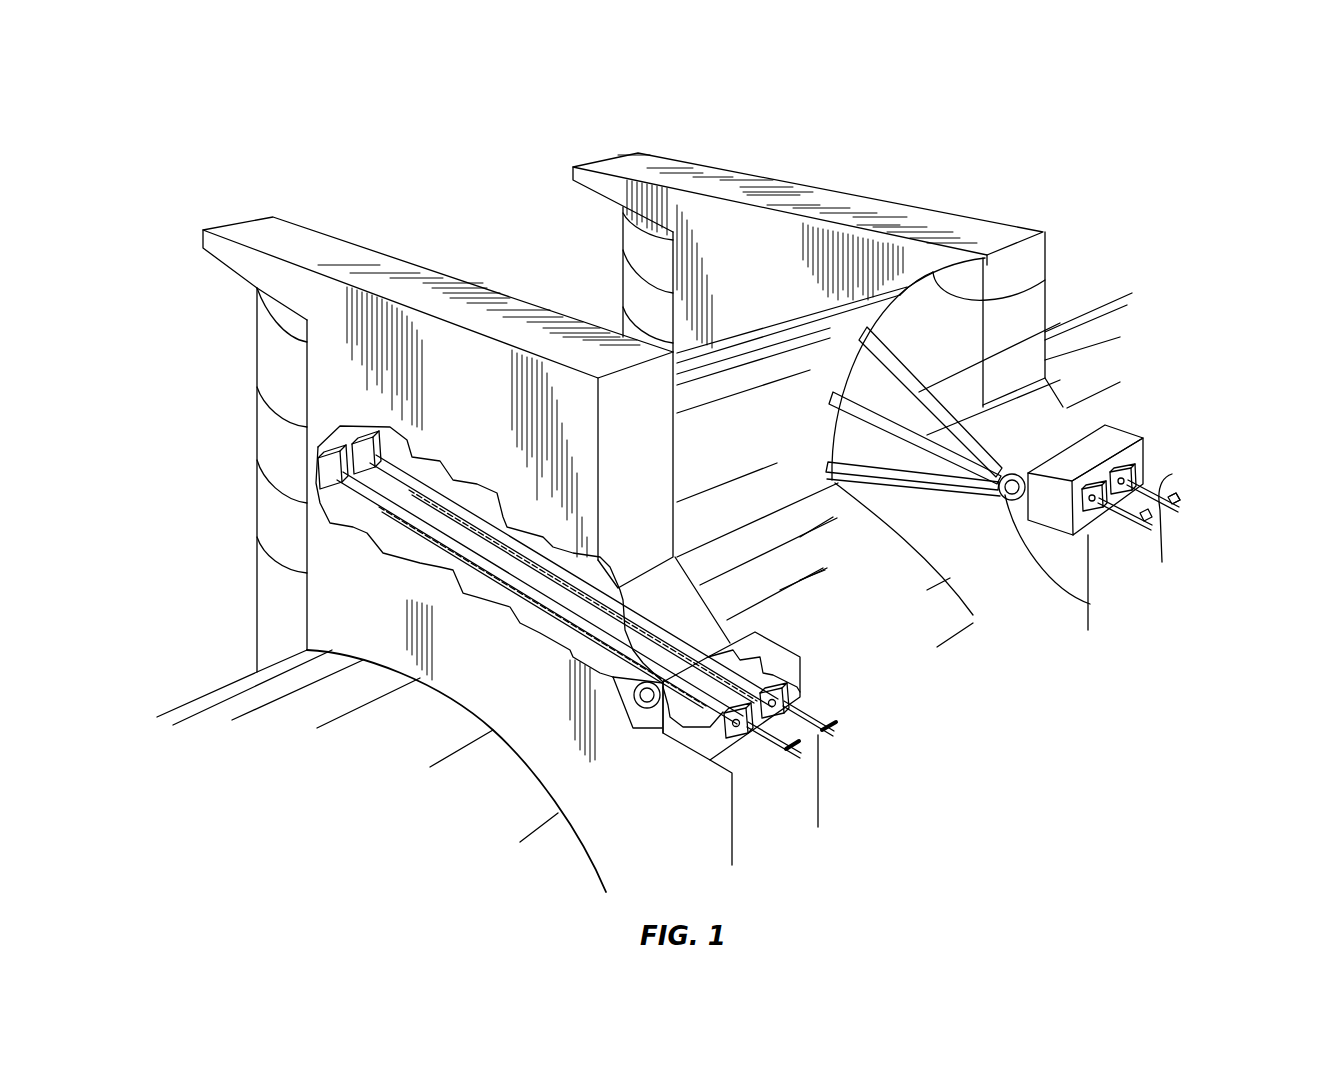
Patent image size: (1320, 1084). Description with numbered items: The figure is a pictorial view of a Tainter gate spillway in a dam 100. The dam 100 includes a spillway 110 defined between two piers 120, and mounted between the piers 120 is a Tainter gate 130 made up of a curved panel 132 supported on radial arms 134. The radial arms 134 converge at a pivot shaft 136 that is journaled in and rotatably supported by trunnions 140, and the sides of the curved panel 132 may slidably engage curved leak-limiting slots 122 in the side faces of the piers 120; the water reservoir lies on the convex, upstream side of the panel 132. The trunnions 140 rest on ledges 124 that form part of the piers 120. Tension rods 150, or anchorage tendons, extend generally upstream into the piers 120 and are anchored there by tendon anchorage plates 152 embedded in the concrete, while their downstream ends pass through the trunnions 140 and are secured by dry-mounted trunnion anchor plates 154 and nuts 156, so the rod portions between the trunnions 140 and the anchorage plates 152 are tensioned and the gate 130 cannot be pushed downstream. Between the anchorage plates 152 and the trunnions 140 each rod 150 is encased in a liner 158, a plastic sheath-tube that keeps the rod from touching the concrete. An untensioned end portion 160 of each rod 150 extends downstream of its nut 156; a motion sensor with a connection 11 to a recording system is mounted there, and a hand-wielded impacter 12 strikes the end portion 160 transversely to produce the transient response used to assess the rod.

The dam 100 is at (1076, 144).
The spillway 110 is at (907, 598).
The piers 120 is at (408, 249).
The curved leak-limiting slots 122 is at (1000, 300).
The ledges 124 is at (1097, 535).
The Tainter gate 130 is at (723, 300).
The curved panel 132 is at (695, 408).
The radial arms 134 is at (1012, 388).
The pivot shaft 136 is at (1090, 602).
The trunnions 140 is at (1110, 435).
The tension rods 150 is at (448, 545).
The tendon anchorage plates 152 is at (330, 480).
The trunnion anchor plates 154 is at (790, 697).
The nuts 156 is at (787, 703).
The liner 158 is at (363, 492).
The untensioned end portion 160 is at (820, 712).
The connection 11 is at (858, 713).
The impacter 12 is at (833, 713).